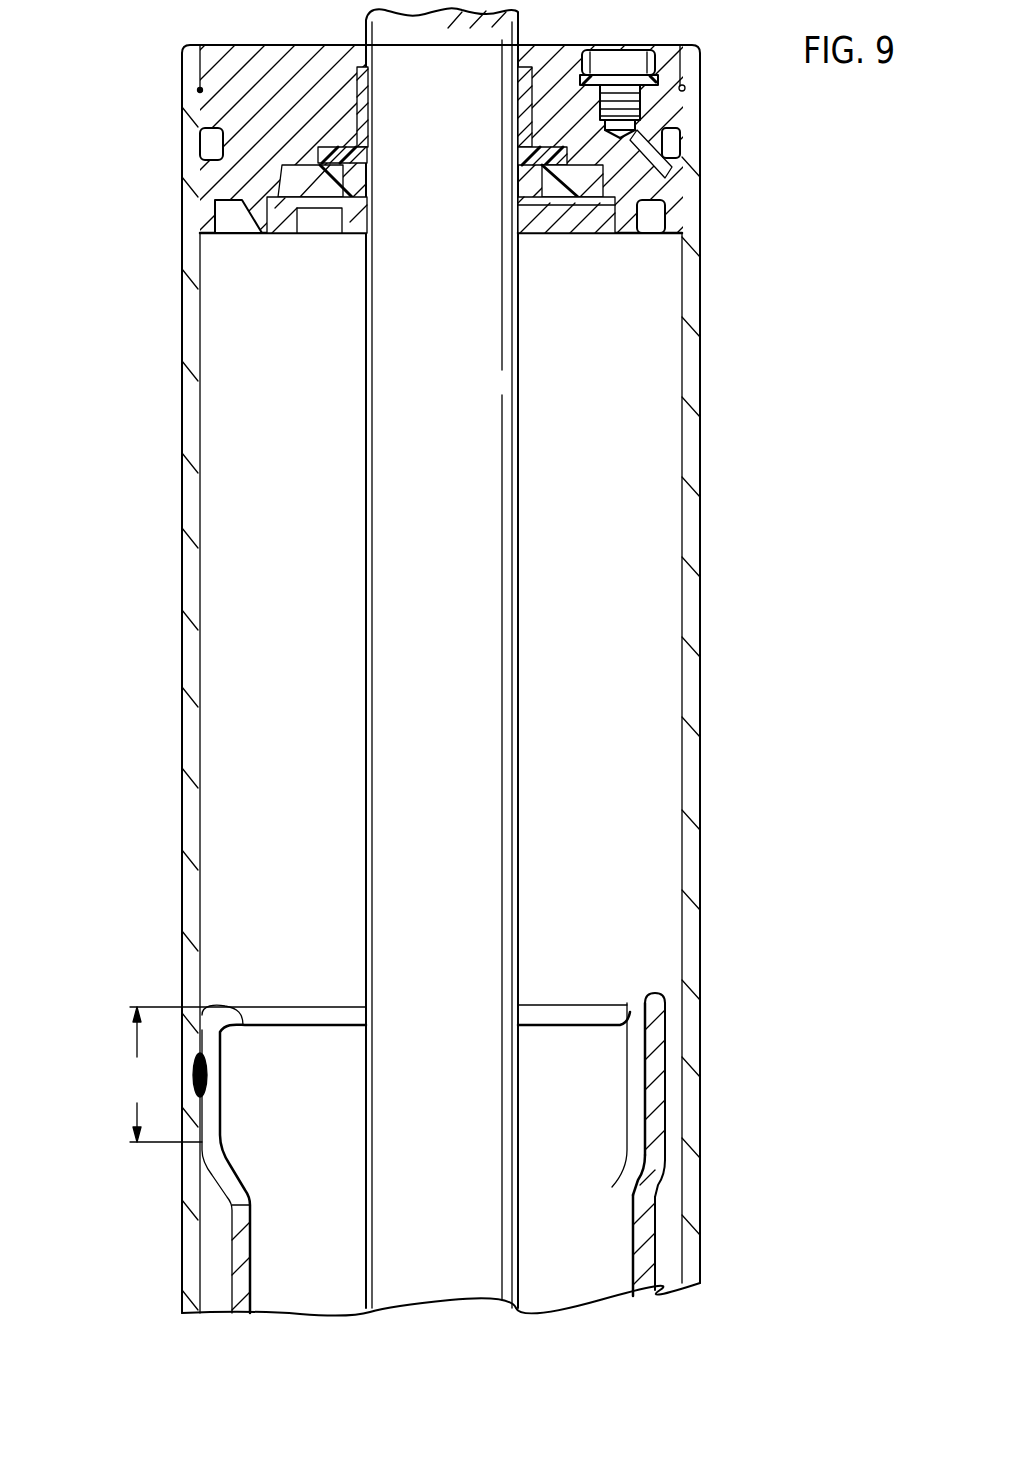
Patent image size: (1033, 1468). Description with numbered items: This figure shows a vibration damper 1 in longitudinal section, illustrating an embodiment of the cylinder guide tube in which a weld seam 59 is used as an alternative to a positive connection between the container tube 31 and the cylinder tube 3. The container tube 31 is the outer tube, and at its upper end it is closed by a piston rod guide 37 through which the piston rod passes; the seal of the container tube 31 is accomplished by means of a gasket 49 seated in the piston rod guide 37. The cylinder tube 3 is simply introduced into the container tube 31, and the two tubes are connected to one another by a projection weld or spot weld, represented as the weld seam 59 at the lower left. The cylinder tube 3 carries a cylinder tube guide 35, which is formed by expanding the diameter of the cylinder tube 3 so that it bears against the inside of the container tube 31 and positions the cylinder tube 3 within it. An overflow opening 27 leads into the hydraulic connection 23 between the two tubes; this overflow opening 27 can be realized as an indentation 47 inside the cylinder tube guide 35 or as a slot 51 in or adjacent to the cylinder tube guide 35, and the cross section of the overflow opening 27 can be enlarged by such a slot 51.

The piston-cylinder unit 1 is at (143, 617).
The cylinder tube 3 is at (643, 1238).
The hydraulic connection 23 is at (665, 1210).
The overflow opening 27 is at (673, 1108).
The container tube 31 is at (182, 402).
The cylinder tube guide 35 is at (162, 1074).
The piston rod guide 37 is at (262, 165).
The indentation 47 is at (670, 1022).
The gasket 49 is at (207, 143).
The slot 51 is at (210, 1122).
The weld seam 59 is at (193, 1073).